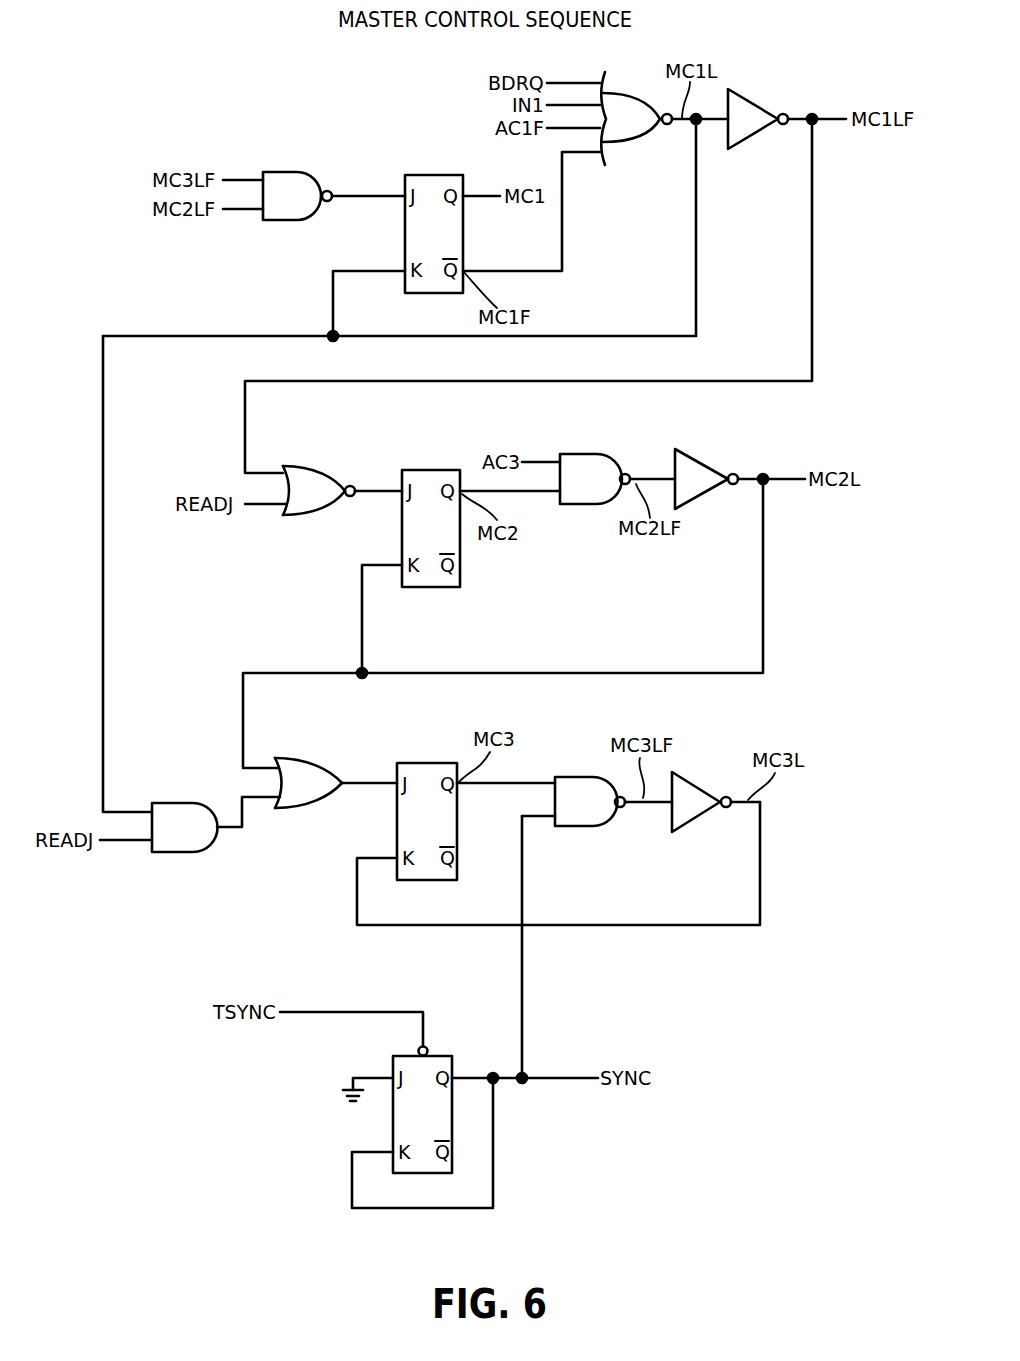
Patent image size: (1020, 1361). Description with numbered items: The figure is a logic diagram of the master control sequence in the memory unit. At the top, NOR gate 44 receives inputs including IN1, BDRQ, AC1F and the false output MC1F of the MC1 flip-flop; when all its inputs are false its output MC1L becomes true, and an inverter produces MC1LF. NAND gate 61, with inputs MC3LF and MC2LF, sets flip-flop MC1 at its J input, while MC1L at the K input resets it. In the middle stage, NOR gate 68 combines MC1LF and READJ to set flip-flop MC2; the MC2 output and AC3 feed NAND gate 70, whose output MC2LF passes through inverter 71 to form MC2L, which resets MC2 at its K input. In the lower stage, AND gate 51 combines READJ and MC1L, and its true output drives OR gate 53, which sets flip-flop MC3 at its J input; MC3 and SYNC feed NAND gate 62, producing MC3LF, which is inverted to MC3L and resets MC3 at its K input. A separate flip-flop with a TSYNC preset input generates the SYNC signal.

The NOR gate 44 is at (623, 93).
The NAND gate 61 is at (287, 172).
The NOR gate 68 is at (303, 466).
The NAND gate 70 is at (588, 454).
The inverter 71 is at (695, 452).
The OR gate 53 is at (305, 758).
The AND gate 51 is at (175, 803).
The NAND gate 62 is at (583, 826).